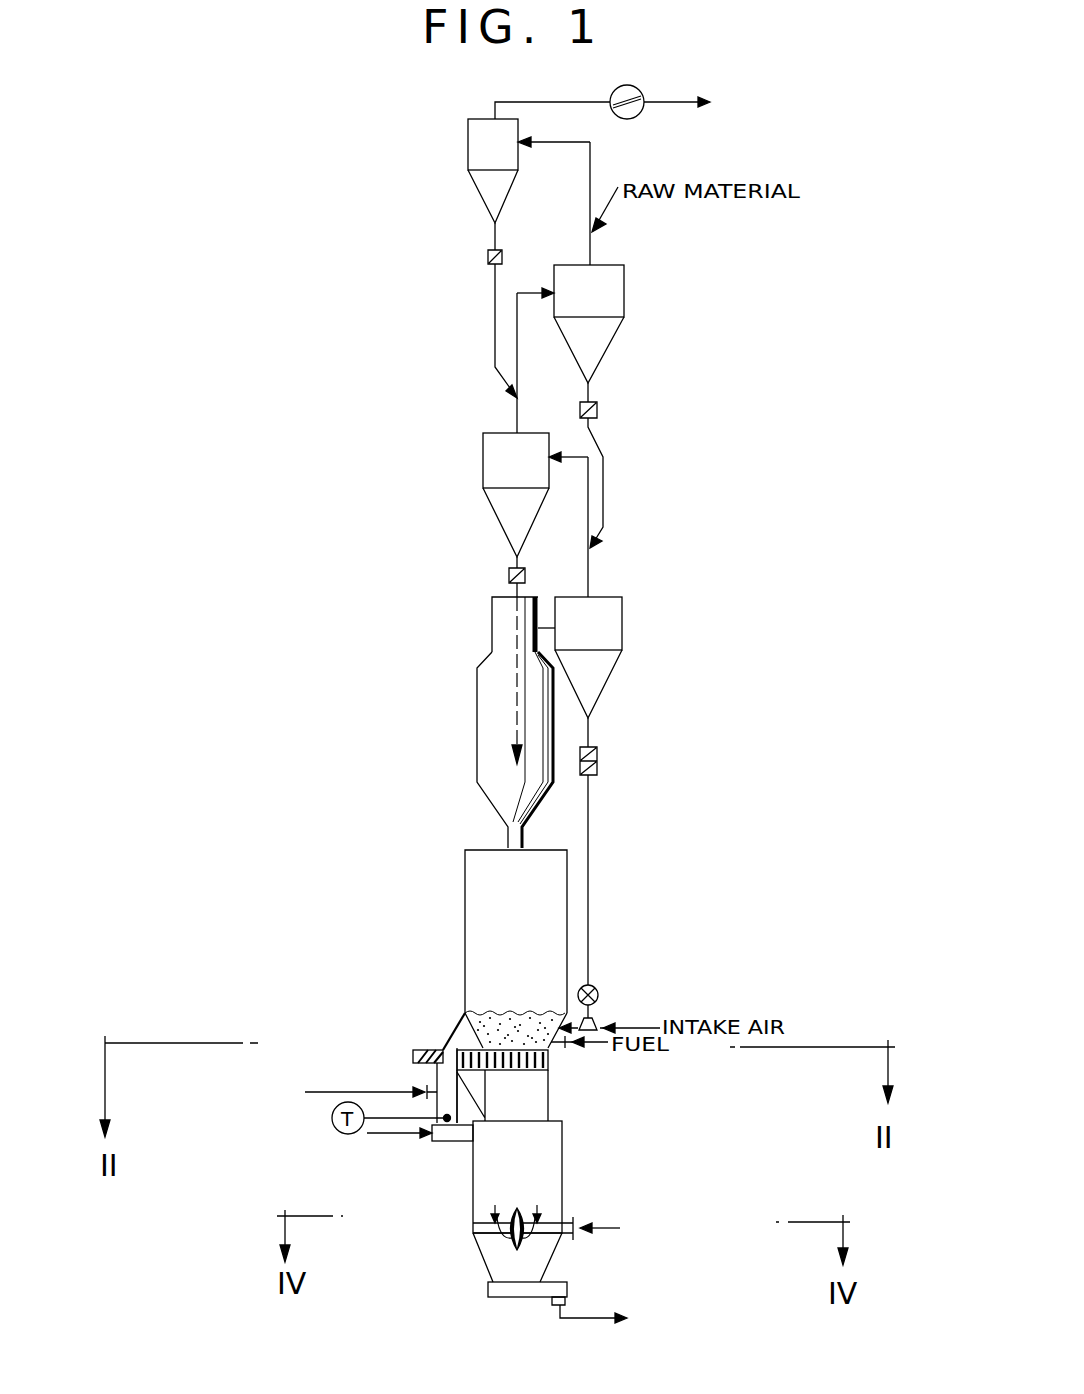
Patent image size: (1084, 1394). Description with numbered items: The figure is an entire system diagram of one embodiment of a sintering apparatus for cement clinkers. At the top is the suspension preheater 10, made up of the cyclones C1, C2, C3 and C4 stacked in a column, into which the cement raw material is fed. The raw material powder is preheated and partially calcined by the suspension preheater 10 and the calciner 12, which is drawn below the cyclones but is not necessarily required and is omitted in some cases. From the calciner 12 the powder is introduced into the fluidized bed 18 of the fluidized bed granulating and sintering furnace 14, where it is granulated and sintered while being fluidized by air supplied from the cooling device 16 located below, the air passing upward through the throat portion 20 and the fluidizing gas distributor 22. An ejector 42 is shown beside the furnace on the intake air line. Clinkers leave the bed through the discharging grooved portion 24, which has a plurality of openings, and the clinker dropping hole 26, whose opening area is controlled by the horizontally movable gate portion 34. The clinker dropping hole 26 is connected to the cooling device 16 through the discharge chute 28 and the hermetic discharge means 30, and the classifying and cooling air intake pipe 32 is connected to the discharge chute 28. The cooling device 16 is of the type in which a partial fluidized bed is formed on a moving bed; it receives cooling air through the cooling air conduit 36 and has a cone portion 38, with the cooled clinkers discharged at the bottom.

The suspension preheater 10 is at (660, 401).
The calciner 12 is at (477, 738).
The fluidized bed granulating and sintering furnace 14 is at (465, 903).
The cooling device 16 is at (473, 1205).
The fluidized bed 18 is at (505, 1012).
The throat portion 20 is at (540, 1100).
The fluidizing gas distributor 22 is at (548, 1063).
The discharging grooved portion 24 is at (458, 1028).
The clinker dropping hole 26 is at (441, 1048).
The discharge chute 28 is at (437, 1083).
The hermetic discharge means 30 is at (462, 1142).
The classifying and cooling air intake pipe 32 is at (323, 1093).
The gate portion 34 is at (423, 1050).
The cooling air conduit 36 is at (562, 1222).
The cone portion 38 is at (517, 1205).
The ejector 42 is at (596, 1020).
The cyclone C1 is at (600, 791).
The cyclone C2 is at (503, 515).
The cyclone C3 is at (592, 406).
The cyclone C4 is at (504, 258).